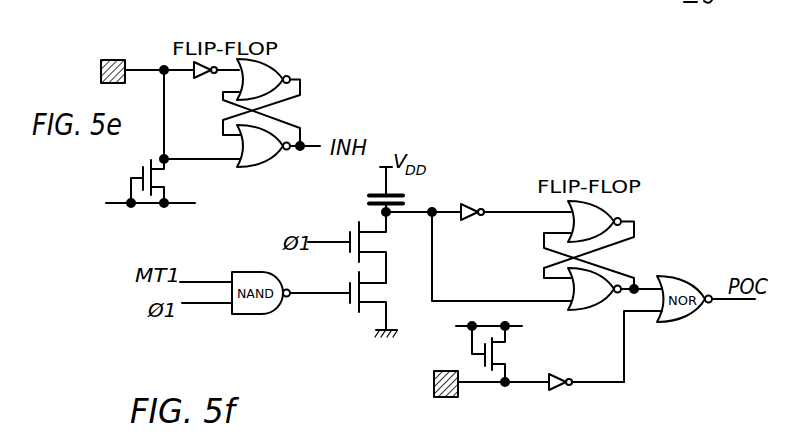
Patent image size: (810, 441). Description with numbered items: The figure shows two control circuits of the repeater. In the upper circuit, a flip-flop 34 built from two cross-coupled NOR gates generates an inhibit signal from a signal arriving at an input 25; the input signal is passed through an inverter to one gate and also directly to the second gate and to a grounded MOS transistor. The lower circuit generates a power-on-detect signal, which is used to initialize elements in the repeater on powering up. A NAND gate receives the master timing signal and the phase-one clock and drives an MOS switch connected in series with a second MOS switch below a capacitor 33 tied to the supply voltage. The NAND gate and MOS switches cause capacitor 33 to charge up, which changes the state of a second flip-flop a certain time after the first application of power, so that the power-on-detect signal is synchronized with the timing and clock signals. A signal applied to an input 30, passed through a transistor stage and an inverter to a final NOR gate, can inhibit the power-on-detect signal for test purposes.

In FIG. 5e, the input 25 is at (114, 58).
In FIG. 5e, the flip-flop 34 is at (290, 44).
In FIG. 5f, the capacitor 33 is at (354, 193).
In FIG. 5f, the input 30 is at (434, 386).